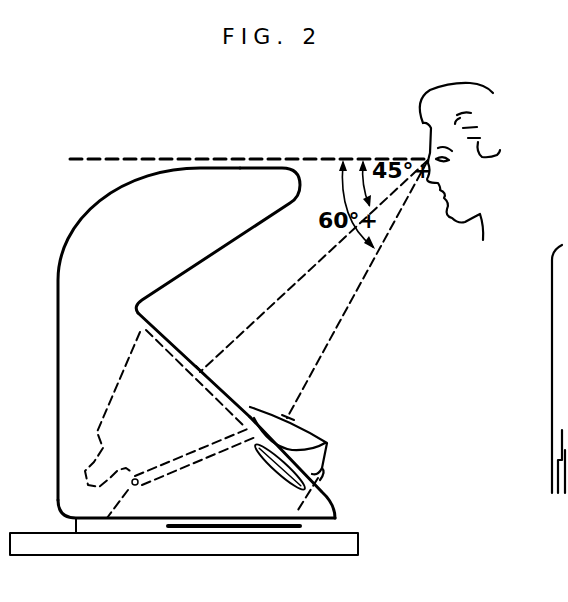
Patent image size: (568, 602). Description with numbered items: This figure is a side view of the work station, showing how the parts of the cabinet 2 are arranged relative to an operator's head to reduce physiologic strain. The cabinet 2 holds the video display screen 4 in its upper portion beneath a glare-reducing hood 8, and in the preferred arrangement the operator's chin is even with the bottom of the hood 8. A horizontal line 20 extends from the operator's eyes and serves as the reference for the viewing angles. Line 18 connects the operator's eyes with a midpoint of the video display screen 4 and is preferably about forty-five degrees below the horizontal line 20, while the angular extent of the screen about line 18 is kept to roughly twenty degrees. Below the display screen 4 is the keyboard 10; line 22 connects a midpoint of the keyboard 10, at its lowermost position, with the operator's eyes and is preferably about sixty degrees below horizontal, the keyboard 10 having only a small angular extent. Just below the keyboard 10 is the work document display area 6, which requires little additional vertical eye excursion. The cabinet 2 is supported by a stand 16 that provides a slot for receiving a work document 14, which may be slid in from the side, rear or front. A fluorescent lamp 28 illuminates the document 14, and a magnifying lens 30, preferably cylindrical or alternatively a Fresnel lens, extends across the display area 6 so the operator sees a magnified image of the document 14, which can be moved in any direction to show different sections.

The cabinet 2 is at (141, 265).
The video display screen 4 is at (175, 352).
The work document display area 6 is at (322, 471).
The glare-reducing hood 8 is at (216, 186).
The keyboard 10 is at (333, 457).
The work document 14 is at (215, 523).
The stand 16 is at (336, 520).
The line connecting the eyes with the display screen midpoint 18 is at (288, 291).
The horizontal line 20 is at (250, 155).
The line connecting the keyboard midpoint with the eyes 22 is at (350, 307).
The fluorescent lamp 28 is at (136, 485).
The magnifying lens 30 is at (264, 462).